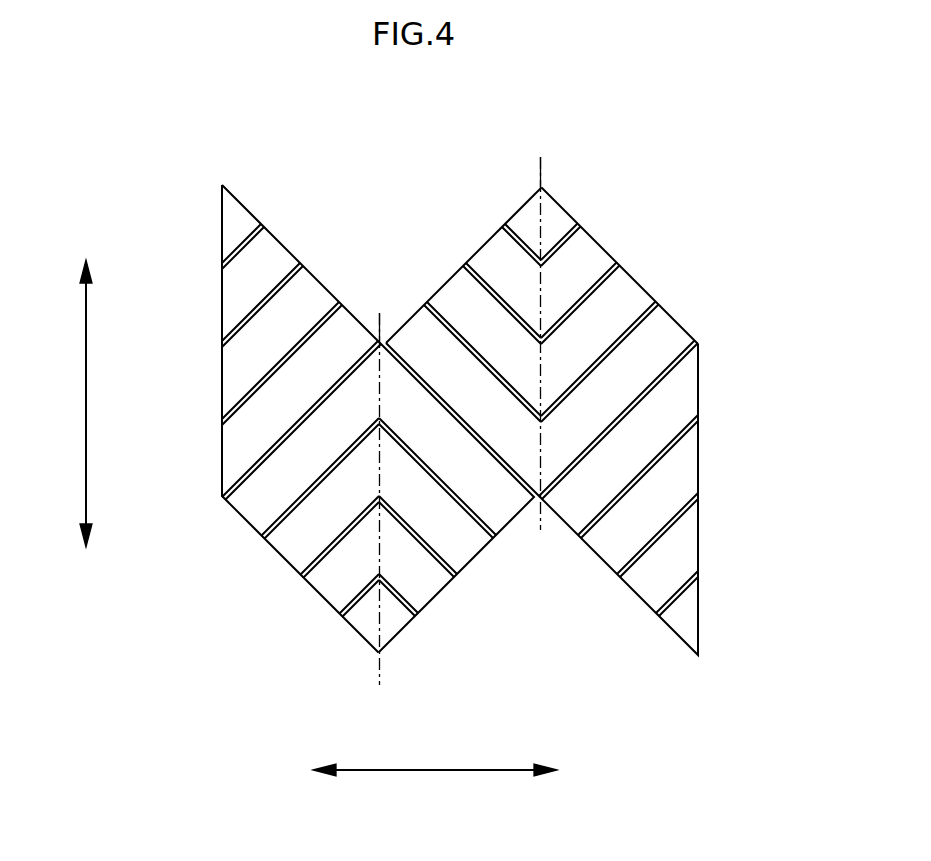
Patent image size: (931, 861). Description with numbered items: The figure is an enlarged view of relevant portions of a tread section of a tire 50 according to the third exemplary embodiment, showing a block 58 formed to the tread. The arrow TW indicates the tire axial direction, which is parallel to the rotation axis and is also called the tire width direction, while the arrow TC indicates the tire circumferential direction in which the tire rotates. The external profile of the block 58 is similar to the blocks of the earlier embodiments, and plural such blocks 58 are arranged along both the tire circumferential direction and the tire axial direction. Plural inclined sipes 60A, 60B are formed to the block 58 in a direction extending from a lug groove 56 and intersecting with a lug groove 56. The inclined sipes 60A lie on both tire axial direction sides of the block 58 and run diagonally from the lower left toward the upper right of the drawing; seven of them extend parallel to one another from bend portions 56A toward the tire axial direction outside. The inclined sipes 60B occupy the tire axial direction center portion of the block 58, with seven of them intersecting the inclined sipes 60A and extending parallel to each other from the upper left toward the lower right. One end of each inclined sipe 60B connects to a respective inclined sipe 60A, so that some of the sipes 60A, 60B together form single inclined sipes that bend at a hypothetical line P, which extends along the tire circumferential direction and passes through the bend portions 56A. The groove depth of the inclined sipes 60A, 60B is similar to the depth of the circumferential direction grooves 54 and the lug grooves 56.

The tire 50 is at (616, 128).
The circumferential direction grooves 54 is at (205, 398).
The lug groove 56 is at (459, 253).
The bend portions 56A is at (540, 146).
The block 58 is at (638, 282).
The inclined sipes 60A is at (268, 372).
The inclined sipes 60B is at (475, 520).
The hypothetical line P is at (378, 313).
The arrow indicating tire circumferential direction TC is at (86, 405).
The arrow indicating tire axial direction TW is at (435, 772).